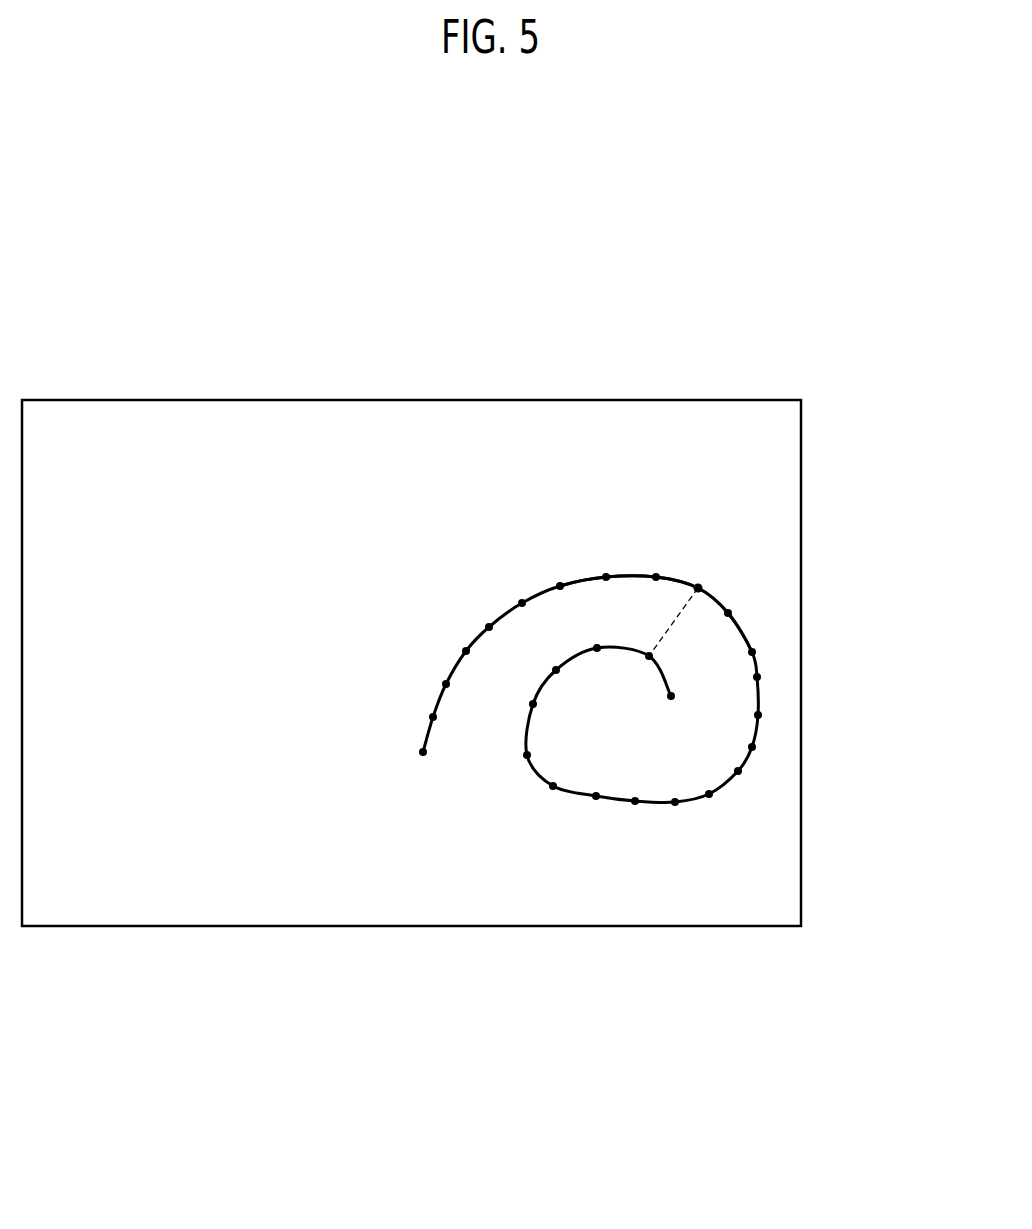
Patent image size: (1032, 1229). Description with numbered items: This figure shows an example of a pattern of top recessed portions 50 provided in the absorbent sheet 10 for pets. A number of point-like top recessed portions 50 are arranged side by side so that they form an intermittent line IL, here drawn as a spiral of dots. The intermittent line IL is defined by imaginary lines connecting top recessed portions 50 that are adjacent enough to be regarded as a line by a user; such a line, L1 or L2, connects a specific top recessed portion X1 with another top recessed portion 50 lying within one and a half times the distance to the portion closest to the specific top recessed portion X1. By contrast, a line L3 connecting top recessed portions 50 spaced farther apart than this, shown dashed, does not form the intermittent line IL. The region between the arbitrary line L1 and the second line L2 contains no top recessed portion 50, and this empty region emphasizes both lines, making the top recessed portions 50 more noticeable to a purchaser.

The touch panel 10 is at (199, 389).
The top recessed portion 50 is at (757, 677).
The line L1 is at (681, 577).
The specific top recessed portion X1 is at (703, 583).
The second line L2 is at (718, 598).
The line L3 is at (670, 632).
The intermittent line IL is at (702, 800).